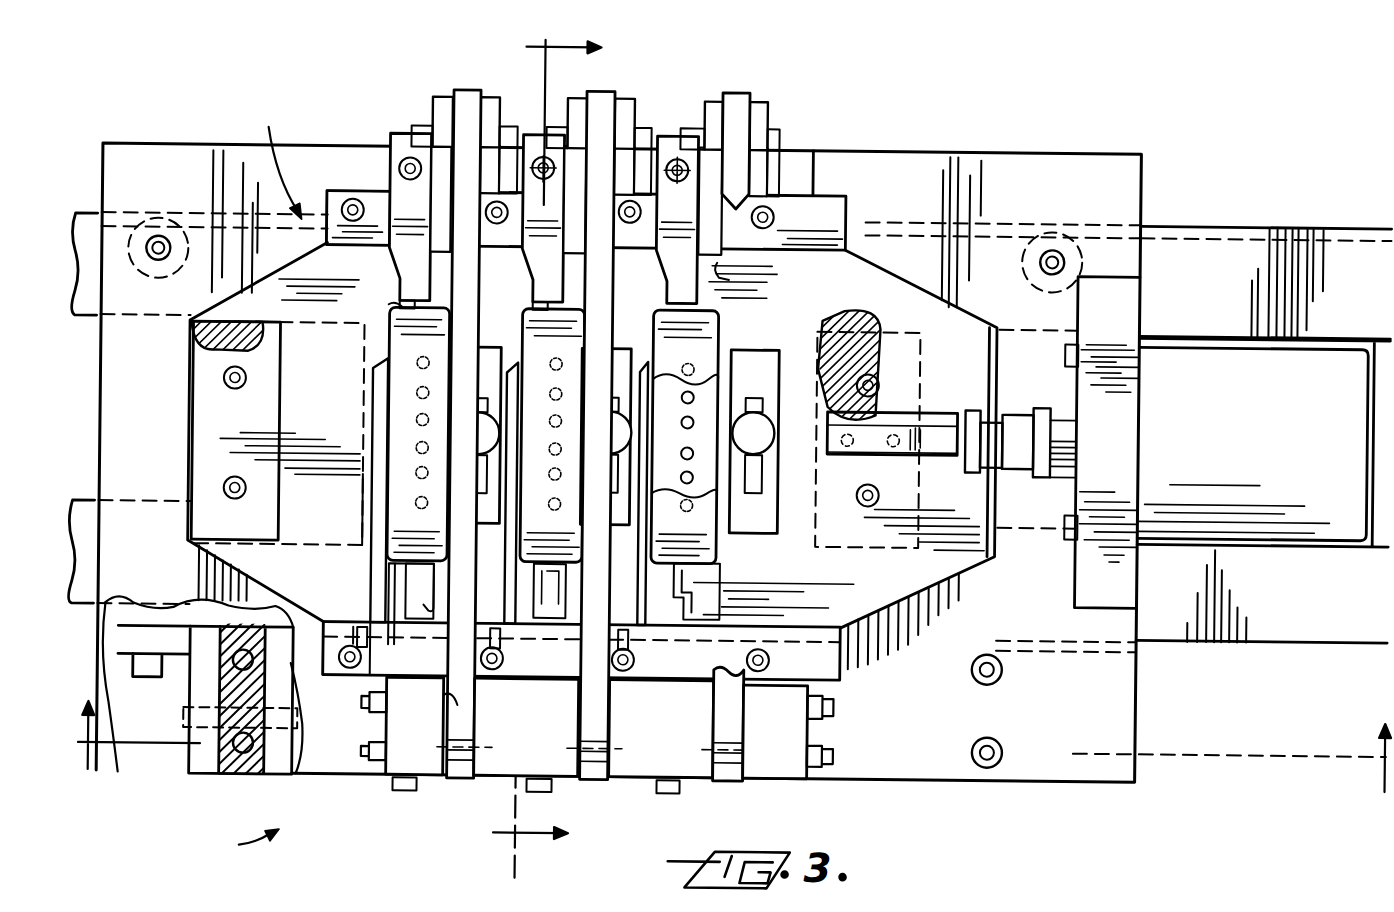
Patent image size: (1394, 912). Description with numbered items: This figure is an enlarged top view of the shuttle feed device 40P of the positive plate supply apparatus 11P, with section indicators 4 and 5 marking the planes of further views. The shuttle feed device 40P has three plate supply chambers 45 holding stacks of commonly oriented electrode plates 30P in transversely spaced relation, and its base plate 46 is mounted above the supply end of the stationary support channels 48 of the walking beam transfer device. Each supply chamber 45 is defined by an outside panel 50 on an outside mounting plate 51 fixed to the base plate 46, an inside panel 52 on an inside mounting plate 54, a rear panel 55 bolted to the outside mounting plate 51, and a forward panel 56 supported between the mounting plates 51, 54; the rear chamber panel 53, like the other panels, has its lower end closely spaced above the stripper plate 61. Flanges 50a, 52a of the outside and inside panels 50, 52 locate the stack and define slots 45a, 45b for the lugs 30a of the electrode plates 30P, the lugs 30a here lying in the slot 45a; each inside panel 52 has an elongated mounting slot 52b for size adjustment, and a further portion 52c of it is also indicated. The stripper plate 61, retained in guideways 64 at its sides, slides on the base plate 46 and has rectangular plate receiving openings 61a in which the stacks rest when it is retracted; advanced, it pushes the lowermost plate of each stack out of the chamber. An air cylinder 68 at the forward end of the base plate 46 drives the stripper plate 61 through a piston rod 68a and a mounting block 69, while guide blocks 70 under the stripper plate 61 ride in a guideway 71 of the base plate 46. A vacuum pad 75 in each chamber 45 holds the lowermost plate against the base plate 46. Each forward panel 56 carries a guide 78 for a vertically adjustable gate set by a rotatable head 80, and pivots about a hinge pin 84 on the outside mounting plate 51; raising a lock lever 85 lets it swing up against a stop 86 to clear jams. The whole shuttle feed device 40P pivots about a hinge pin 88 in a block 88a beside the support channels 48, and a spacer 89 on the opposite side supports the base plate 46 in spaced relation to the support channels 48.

The section line 4- 4 is at (535, 460).
The section line 5- 5 is at (734, 763).
The plate supply apparatus 11P is at (234, 841).
The electrode plates 30P is at (410, 568).
The lugs 30a is at (452, 556).
The shuttle feed device 40P is at (269, 160).
The plate supply chambers 45 is at (378, 405).
The slot 45a is at (452, 588).
The slot 45b is at (362, 640).
The base plate 46 is at (1020, 150).
The stationary support channels 48 is at (1340, 214).
The outside panel 50 is at (415, 680).
The flange 50a is at (370, 630).
The outside mounting plate 51 is at (383, 766).
The inside panel 52 is at (402, 130).
The flange 52a is at (402, 280).
The elongated mounting slot 52b is at (400, 170).
The clamp bar tab 52c is at (392, 301).
The rear chamber panel 53 is at (495, 660).
The inside mounting plate 54 is at (822, 147).
The rear panel 55 is at (366, 483).
The forward panel 56 is at (452, 108).
The stripper plate 61 is at (985, 300).
The plate receiving openings 61a is at (735, 268).
The guideways 64 is at (852, 200).
The air cylinder 68 is at (1215, 340).
The piston rod 68a is at (1060, 400).
The mounting block 69 is at (920, 405).
The guide blocks 70 is at (202, 318).
The guideway 71 is at (197, 372).
The vacuum pad 75 is at (420, 466).
The guide 78 is at (437, 355).
The rotatable head 80 is at (485, 408).
The hinge pin 84 is at (842, 697).
The lock lever 85 is at (465, 85).
The stop 86 is at (468, 772).
The hinge pin 88 is at (191, 714).
The block 88a is at (245, 773).
The spacer 89 is at (170, 232).